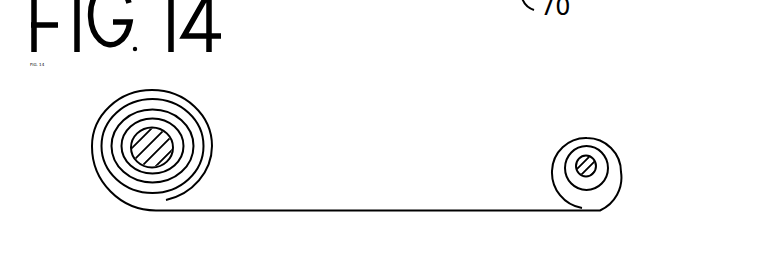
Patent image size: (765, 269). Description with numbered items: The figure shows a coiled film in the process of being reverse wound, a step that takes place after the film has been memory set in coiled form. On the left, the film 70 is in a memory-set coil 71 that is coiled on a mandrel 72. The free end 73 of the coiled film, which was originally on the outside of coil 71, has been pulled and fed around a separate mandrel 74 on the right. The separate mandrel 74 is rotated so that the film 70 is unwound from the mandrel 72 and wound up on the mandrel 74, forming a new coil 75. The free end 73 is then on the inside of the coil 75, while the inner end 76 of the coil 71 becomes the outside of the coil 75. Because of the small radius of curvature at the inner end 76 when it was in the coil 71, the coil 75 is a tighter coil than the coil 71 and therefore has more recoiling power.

The film 70 is at (287, 210).
The memory-set coil 71 is at (181, 108).
The mandrel 72 is at (150, 148).
The free end 73 is at (584, 187).
The separate mandrel 74 is at (594, 166).
The coil 75 is at (586, 137).
The inner end 76 is at (175, 129).